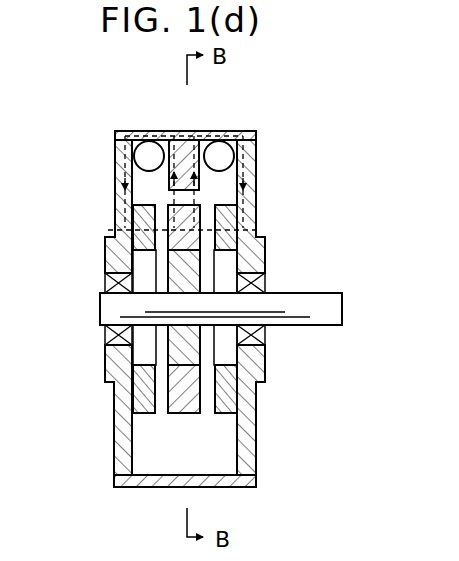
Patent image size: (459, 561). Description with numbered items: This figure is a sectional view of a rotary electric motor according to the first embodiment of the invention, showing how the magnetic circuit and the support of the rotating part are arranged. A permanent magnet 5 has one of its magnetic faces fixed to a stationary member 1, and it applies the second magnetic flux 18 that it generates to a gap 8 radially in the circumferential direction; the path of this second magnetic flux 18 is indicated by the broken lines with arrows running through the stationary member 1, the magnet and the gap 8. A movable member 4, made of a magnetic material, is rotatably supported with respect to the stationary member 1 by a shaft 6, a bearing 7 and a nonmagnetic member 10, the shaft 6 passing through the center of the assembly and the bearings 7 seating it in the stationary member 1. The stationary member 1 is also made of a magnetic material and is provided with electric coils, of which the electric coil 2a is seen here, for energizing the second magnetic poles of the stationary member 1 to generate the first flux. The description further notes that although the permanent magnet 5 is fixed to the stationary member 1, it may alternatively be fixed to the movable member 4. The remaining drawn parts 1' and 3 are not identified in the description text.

The stationary member 1 is at (187, 313).
The top plate 1' is at (185, 116).
The electric coil 2a is at (143, 158).
The side wall 3 is at (256, 181).
The movable member 4 is at (178, 413).
The permanent magnet 5 is at (138, 226).
The shaft 6 is at (343, 311).
The bearing 7 is at (265, 285).
The gap 8 is at (198, 197).
The nonmagnetic member 10 is at (205, 268).
The second magnetic flux 18 is at (146, 133).